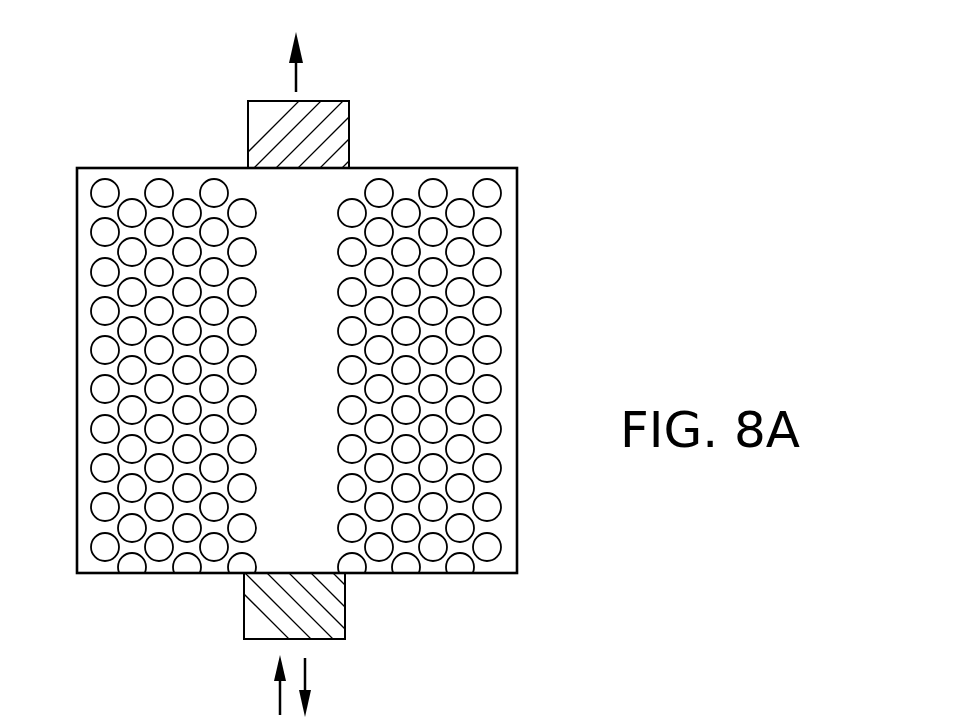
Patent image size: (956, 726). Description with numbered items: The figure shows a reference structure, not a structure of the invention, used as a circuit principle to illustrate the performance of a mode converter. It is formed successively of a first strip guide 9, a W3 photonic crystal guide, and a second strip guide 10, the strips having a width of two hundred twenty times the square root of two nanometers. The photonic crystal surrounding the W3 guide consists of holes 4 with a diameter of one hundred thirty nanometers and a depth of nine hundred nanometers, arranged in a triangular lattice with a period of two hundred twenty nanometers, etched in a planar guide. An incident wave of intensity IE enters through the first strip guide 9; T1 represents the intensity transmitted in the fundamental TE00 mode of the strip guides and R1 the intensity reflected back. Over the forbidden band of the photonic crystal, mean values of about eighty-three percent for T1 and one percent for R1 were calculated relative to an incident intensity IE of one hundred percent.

The holes 4 is at (105, 237).
The second strip guide 10 is at (350, 137).
The first strip guide 9 is at (244, 618).
The transmitted intensity T1 is at (296, 85).
The incident wave intensity IE is at (280, 703).
The reflected intensity R1 is at (305, 675).
The W3 photonic crystal guide W3 is at (313, 542).